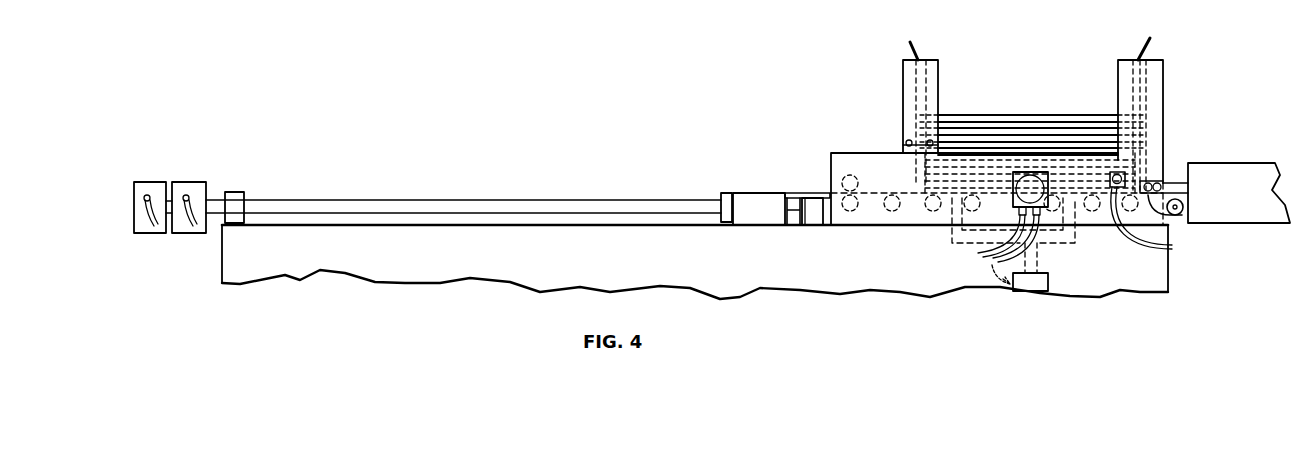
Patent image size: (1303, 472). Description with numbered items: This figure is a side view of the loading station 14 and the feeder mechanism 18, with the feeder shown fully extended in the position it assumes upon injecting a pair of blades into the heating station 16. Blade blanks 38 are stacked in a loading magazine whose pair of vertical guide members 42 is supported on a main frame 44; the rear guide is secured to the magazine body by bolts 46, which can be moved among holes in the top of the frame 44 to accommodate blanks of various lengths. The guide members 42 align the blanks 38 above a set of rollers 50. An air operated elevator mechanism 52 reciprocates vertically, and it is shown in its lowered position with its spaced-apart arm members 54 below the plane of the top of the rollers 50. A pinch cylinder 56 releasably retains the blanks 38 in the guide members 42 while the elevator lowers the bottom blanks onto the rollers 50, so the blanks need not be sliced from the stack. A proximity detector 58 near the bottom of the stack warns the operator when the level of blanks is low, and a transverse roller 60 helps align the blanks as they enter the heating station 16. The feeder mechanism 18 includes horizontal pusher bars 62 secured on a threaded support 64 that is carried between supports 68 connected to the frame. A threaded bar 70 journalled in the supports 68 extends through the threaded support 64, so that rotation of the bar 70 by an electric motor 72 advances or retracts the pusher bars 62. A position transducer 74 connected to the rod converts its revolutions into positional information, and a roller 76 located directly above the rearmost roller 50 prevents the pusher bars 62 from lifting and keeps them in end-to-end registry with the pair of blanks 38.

The loading station 14 is at (825, 90).
The heating station 16 is at (1230, 152).
The feeder mechanism 18 is at (696, 128).
The blade blanks 38 is at (985, 120).
The vertical guide members 42 is at (914, 46).
The main frame 44 is at (847, 154).
The bolts 46 is at (929, 139).
The rollers 50 is at (933, 212).
The elevator mechanism 52 is at (1037, 262).
The arm members 54 is at (1078, 240).
The pinch cylinder 56 is at (1013, 177).
The proximity detector 58 is at (1125, 172).
The transverse roller 60 is at (1180, 216).
The pusher bars 62 is at (816, 193).
The threaded support 64 is at (770, 193).
The supports 68 is at (236, 192).
The threaded bar 70 is at (797, 212).
The electric motor 72 is at (185, 182).
The position transducer 74 is at (141, 182).
The roller 76 is at (856, 180).